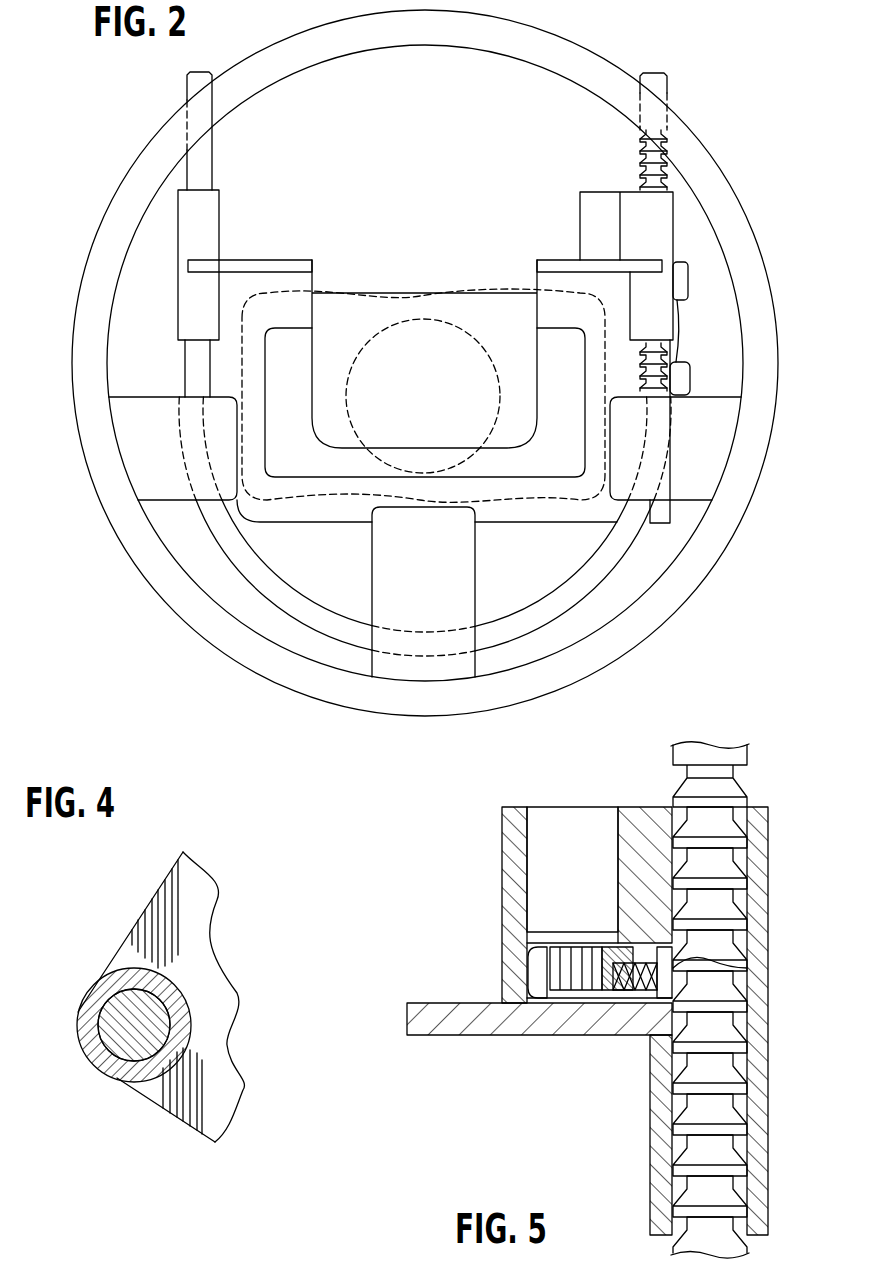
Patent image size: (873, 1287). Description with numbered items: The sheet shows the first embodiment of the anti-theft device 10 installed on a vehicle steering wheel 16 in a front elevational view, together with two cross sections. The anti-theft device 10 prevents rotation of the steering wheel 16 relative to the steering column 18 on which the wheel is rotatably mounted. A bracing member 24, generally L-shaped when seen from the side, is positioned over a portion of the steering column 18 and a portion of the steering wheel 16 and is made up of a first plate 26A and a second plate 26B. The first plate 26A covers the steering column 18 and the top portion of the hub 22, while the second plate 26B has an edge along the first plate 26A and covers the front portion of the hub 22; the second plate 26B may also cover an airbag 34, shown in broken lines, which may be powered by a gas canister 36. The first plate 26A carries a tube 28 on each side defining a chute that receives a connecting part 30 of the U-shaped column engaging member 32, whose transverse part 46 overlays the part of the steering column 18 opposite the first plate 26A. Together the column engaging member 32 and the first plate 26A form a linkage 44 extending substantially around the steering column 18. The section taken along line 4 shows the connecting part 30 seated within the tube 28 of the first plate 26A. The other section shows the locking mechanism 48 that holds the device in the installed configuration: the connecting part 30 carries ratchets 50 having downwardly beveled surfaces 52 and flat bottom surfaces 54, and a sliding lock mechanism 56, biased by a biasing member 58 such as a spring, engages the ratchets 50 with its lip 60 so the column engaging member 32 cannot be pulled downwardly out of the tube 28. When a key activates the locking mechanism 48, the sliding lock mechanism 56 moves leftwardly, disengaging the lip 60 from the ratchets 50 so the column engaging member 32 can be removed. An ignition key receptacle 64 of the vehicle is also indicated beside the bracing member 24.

In FIG. 2, the section line 4— 4 is at (163, 197).
In FIG. 2, the anti-theft device 10 is at (447, 243).
In FIG. 2, the steering wheel 16 is at (550, 690).
In FIG. 2, the steering column 18 is at (555, 517).
In FIG. 2, the hub 22 is at (565, 464).
In FIG. 2, the bracing member 24 is at (505, 245).
In FIG. 2, the first plate 26A is at (290, 258).
In FIG. 4, the first plate 26A is at (200, 982).
In FIG. 2, the second plate 26B is at (363, 332).
In FIG. 2, the tube 28 is at (208, 239).
In FIG. 4, the tube 28 is at (87, 1013).
In FIG. 5, the tube 28 is at (507, 865).
In FIG. 2, the connecting part 30 is at (203, 155).
In FIG. 4, the connecting part 30 is at (125, 1043).
In FIG. 5, the connecting part 30 is at (749, 987).
In FIG. 2, the column engaging member 32 is at (308, 647).
In FIG. 2, the airbag 34 is at (318, 500).
In FIG. 2, the gas canister 36 is at (350, 467).
In FIG. 2, the linkage 44 is at (605, 555).
In FIG. 2, the transverse part 46 is at (488, 642).
In FIG. 5, the locking mechanism 48 is at (583, 891).
In FIG. 5, the ratchets 50 is at (738, 785).
In FIG. 5, the downwardly beveled surfaces 52 is at (738, 827).
In FIG. 5, the flat bottom surfaces 54 is at (748, 862).
In FIG. 5, the sliding lock mechanism 56 is at (610, 1000).
In FIG. 5, the biasing member 58 is at (630, 990).
In FIG. 5, the lip 60 is at (747, 970).
In FIG. 2, the ignition key receptacle 64 is at (682, 377).